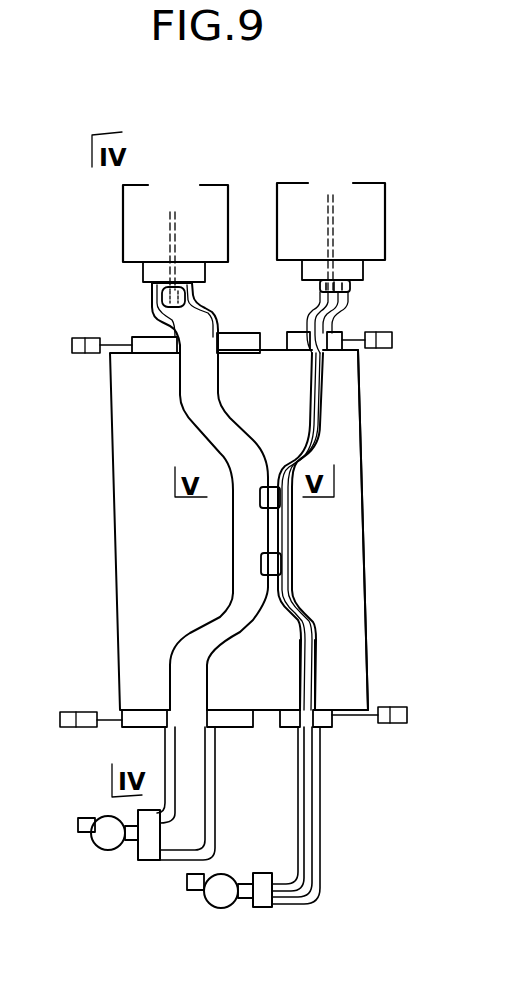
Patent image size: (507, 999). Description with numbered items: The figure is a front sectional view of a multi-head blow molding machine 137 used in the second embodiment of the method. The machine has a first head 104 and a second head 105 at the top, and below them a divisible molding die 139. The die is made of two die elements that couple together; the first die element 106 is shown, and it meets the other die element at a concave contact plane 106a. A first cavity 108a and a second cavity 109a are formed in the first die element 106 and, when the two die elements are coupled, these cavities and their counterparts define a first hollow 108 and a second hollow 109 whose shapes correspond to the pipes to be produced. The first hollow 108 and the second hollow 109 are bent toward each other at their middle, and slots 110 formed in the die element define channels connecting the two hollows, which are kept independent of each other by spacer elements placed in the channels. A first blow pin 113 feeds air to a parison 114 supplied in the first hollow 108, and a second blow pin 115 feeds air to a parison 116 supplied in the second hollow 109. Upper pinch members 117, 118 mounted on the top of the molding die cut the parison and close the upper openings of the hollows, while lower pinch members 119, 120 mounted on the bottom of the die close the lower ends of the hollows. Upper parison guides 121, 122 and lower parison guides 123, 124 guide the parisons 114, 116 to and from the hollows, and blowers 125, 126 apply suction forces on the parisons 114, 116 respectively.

The first head 104 is at (218, 198).
The second head 105 is at (375, 192).
The first die element 106 is at (370, 529).
The concave contact plane 106a is at (355, 413).
The first hollow 108 is at (188, 637).
The first cavity 108a is at (188, 418).
The second hollow 109 is at (316, 625).
The second cavity 109a is at (322, 443).
The slot 110 is at (282, 503).
The first blow pin 113 is at (150, 286).
The parison 114 is at (165, 300).
The second blow pin 115 is at (347, 285).
The parison 116 is at (345, 288).
The upper pinch member 117 is at (147, 350).
The upper pinch member 118 is at (333, 353).
The lower pinch member 119 is at (118, 740).
The lower pinch member 120 is at (325, 727).
The upper parison guide 121 is at (170, 323).
The upper parison guide 122 is at (337, 313).
The lower parison guide 123 is at (215, 760).
The lower parison guide 124 is at (327, 837).
The blower 125 is at (103, 852).
The blower 126 is at (217, 907).
The blow molding machine 137 is at (341, 128).
The divisible molding die 139 is at (387, 364).